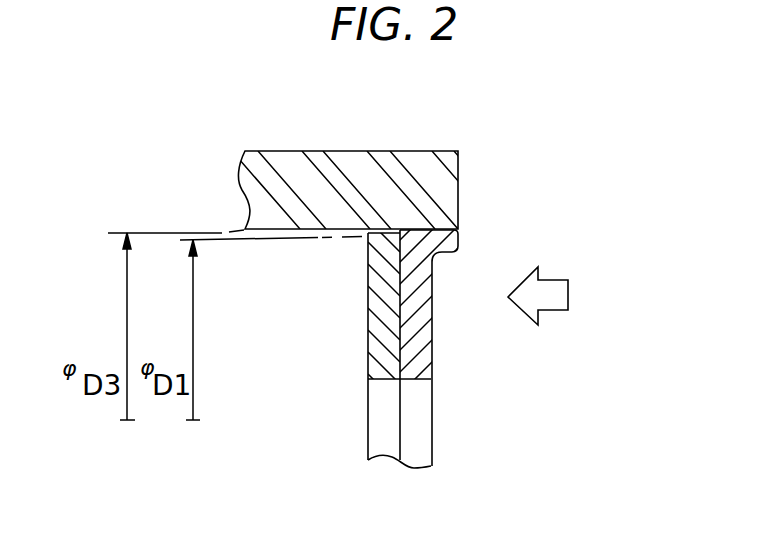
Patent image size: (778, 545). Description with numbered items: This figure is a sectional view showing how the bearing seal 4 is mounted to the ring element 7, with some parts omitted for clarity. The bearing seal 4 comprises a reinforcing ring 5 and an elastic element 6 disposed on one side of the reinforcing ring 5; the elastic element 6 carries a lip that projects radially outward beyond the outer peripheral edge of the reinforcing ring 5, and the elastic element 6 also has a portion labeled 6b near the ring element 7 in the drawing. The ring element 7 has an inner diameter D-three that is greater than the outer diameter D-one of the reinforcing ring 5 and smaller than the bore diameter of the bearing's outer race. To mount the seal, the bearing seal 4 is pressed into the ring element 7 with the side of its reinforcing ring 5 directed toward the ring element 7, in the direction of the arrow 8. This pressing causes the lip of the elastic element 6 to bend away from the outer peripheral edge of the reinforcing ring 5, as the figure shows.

The bearing seal 4 is at (452, 385).
The reinforcing ring 5 is at (382, 287).
The elastic element 6 is at (483, 318).
The flange portion 6b is at (460, 233).
The ring element 7 is at (283, 170).
The arrow 8 is at (557, 290).